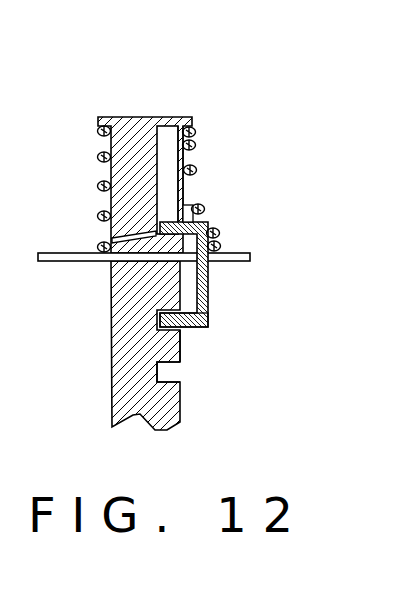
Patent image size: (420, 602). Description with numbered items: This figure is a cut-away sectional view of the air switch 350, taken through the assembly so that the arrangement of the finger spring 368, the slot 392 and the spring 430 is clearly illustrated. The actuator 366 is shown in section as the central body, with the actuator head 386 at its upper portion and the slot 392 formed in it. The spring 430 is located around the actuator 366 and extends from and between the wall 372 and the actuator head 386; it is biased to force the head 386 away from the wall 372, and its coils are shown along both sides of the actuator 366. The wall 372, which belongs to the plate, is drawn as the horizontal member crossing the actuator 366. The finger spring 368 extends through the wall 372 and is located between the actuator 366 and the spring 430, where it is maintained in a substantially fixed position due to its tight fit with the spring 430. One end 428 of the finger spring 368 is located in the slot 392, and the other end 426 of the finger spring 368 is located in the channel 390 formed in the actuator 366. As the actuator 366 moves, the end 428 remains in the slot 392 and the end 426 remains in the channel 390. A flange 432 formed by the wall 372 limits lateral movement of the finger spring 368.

The air switch 350 is at (192, 66).
The actuator head 386 is at (178, 116).
The slot 392 is at (184, 153).
The flange 432 is at (189, 203).
The wall 372 is at (242, 252).
The finger spring 368 is at (209, 283).
The end of finger spring 426 is at (204, 338).
The actuator 366 is at (194, 353).
The channel 390 is at (187, 370).
The spring 430 is at (98, 186).
The end of finger spring 428 is at (109, 239).